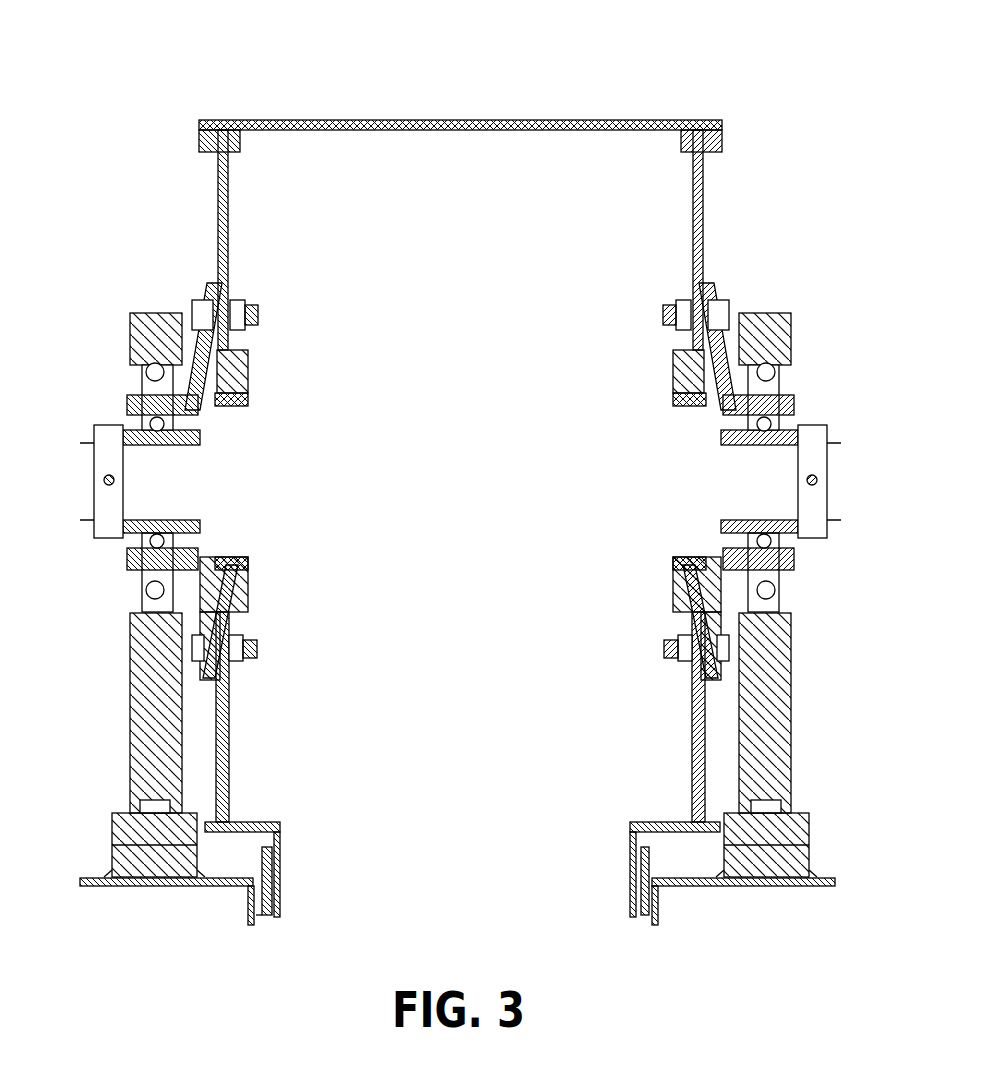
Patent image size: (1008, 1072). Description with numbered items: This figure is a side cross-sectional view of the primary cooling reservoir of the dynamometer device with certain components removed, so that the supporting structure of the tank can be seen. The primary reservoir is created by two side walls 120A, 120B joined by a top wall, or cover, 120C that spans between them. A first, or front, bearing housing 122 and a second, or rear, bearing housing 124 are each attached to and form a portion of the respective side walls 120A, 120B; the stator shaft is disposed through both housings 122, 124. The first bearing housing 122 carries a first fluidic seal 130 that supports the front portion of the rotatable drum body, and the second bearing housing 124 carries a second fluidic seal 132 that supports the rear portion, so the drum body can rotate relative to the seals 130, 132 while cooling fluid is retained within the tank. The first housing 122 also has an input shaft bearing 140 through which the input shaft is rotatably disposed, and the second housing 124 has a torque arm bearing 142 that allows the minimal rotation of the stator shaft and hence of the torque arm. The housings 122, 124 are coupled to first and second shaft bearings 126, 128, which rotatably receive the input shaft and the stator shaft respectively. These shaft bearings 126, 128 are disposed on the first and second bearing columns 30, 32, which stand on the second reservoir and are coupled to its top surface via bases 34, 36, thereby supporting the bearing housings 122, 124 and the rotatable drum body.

The top wall 120C is at (362, 120).
The side wall 120A is at (218, 237).
The side wall 120B is at (703, 237).
The first bearing housing 122 is at (238, 355).
The second bearing housing 124 is at (688, 358).
The first shaft bearing 126 is at (116, 382).
The second shaft bearing 128 is at (814, 382).
The first fluidic seal 130 is at (248, 400).
The second fluidic seal 132 is at (668, 400).
The input shaft bearing 140 is at (94, 498).
The torque arm bearing 142 is at (827, 495).
The first bearing column 30 is at (155, 752).
The second bearing column 32 is at (772, 728).
The base 34 is at (130, 835).
The base 36 is at (790, 830).